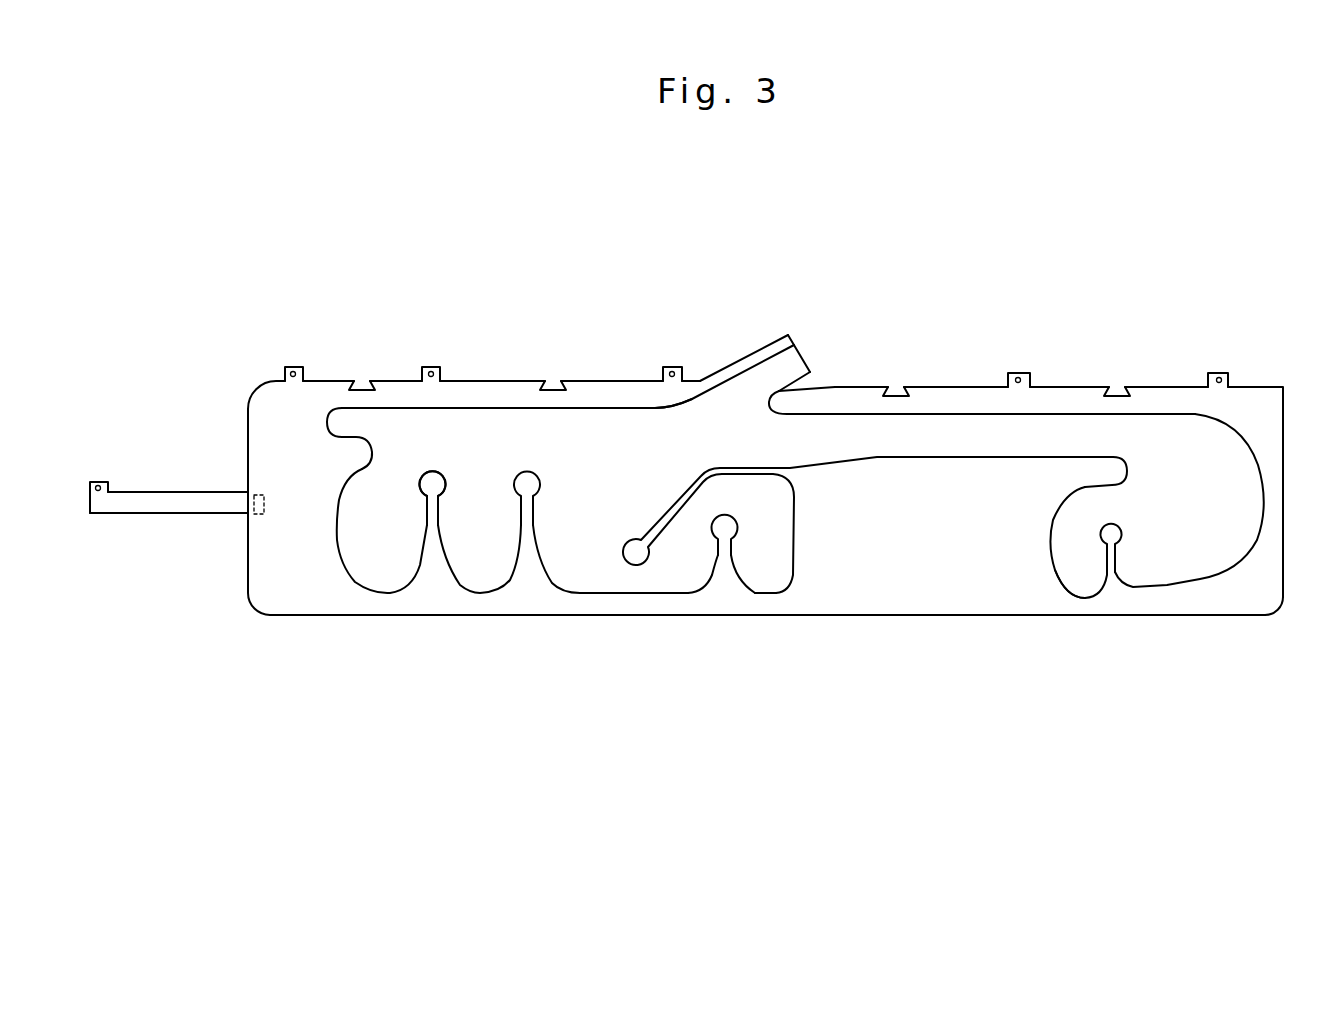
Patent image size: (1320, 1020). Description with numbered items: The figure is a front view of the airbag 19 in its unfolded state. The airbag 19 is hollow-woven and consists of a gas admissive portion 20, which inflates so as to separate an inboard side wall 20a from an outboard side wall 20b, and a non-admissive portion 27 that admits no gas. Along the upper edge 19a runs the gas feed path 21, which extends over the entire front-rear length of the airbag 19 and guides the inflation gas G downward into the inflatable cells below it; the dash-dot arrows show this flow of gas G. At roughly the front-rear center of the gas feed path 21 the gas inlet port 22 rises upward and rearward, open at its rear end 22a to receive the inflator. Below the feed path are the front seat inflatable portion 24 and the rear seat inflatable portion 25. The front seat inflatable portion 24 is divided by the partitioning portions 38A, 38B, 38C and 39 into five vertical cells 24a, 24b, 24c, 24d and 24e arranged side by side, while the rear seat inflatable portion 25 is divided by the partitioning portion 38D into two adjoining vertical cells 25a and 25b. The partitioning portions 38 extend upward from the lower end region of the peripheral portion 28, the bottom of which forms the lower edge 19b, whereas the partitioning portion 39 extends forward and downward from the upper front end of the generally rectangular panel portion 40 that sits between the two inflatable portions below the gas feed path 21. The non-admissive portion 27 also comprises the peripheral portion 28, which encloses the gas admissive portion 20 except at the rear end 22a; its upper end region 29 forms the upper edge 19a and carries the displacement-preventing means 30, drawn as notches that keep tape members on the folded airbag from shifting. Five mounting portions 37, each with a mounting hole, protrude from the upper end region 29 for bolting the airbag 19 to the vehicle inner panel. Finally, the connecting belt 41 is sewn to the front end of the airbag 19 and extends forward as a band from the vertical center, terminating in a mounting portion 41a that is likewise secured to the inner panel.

The airbag 19 is at (1238, 260).
The upper edge 19a is at (1254, 386).
The bottom wall of case 19b is at (1202, 613).
The gas admissive portion 20 is at (673, 403).
The inboard side wall 20a is at (587, 564).
The outboard side wall 20b is at (602, 590).
The gas feed path 21 is at (938, 426).
The gas inlet port 22 is at (780, 365).
The rear end 22a is at (802, 360).
The front seat inflatable portion 24 is at (690, 599).
The vertical cell 24a is at (357, 566).
The vertical cell 24b is at (473, 568).
The vertical cell 24c is at (567, 564).
The vertical cell 24d is at (677, 569).
The vertical cell 24e is at (763, 569).
The rear seat inflatable portion 25 is at (1110, 595).
The vertical cell 25a is at (1072, 572).
The vertical cell 25b is at (1218, 558).
The non-admissive portion 27 is at (982, 402).
The peripheral portion 28 is at (270, 590).
The upper end region 29 is at (597, 403).
The displacement-preventing means 30 is at (363, 383).
The mounting portions 37 is at (286, 370).
The partitioning portions 38 is at (433, 498).
The partitioning portion 38A is at (450, 568).
The partitioning portion 38B is at (528, 546).
The partitioning portion 38C is at (727, 540).
The partitioning portion 38D is at (1113, 536).
The partitioning portion 39 is at (661, 498).
The panel portion 40 is at (933, 580).
The connecting belt 41 is at (168, 516).
The mounting portion 41a is at (99, 481).
The inflation gas G is at (382, 540).